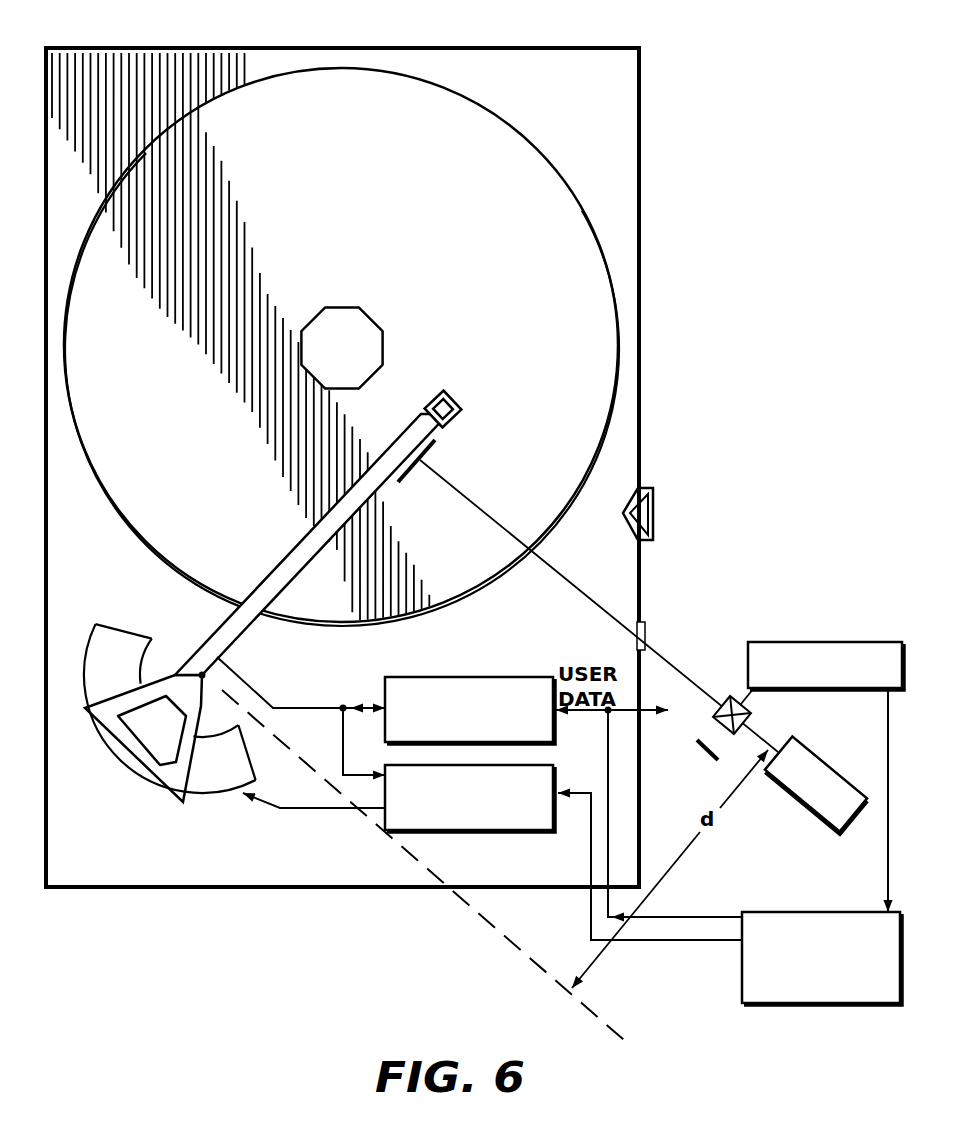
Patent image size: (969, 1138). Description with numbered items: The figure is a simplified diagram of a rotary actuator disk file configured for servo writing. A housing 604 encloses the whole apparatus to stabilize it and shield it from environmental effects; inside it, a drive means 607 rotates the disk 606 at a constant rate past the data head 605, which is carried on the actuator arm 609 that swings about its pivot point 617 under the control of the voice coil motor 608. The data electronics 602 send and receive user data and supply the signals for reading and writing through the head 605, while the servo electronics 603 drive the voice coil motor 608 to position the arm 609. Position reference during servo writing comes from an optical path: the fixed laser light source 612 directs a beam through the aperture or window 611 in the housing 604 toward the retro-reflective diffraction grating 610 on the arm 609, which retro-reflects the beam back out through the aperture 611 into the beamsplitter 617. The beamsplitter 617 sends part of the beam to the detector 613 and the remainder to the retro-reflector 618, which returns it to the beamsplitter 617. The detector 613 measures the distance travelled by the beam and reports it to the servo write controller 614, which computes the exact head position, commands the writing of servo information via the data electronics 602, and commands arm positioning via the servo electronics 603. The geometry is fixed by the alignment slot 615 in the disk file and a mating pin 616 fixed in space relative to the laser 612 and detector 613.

The data electronics 602 is at (522, 650).
The servo electronics 603 is at (467, 831).
The housing 604 is at (563, 48).
The data head 605 is at (455, 400).
The disk 606 is at (530, 143).
The drive means 607 is at (363, 272).
The voice coil motor 608 is at (86, 656).
The actuator arm 609 is at (255, 590).
The retro-reflective diffraction grating 610 is at (418, 464).
The aperture (window) 611 is at (646, 625).
The laser light source 612 is at (783, 787).
The detector 613 is at (812, 616).
The servo write controller 614 is at (803, 910).
The alignment slot 615 is at (630, 486).
The pin 616 is at (656, 514).
The pivot point / beamsplitter 617 is at (200, 673).
The retro-reflector 618 is at (699, 742).